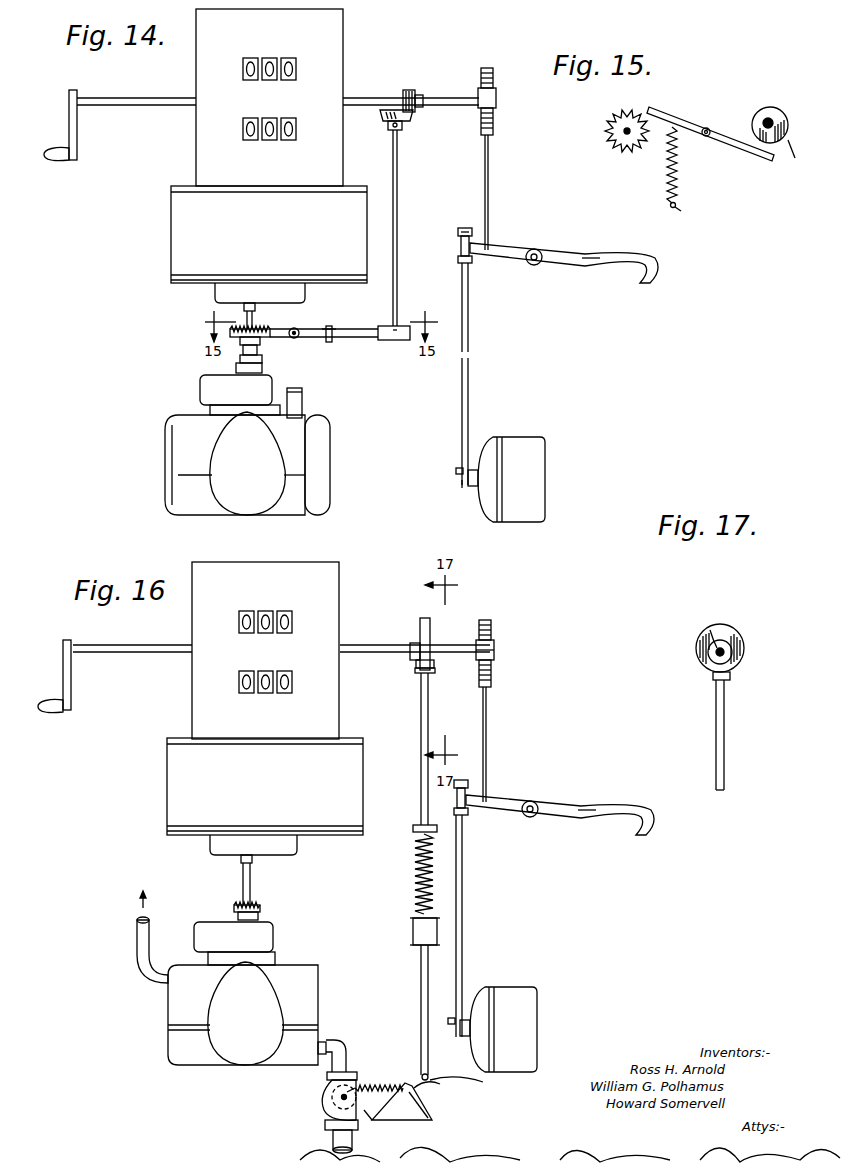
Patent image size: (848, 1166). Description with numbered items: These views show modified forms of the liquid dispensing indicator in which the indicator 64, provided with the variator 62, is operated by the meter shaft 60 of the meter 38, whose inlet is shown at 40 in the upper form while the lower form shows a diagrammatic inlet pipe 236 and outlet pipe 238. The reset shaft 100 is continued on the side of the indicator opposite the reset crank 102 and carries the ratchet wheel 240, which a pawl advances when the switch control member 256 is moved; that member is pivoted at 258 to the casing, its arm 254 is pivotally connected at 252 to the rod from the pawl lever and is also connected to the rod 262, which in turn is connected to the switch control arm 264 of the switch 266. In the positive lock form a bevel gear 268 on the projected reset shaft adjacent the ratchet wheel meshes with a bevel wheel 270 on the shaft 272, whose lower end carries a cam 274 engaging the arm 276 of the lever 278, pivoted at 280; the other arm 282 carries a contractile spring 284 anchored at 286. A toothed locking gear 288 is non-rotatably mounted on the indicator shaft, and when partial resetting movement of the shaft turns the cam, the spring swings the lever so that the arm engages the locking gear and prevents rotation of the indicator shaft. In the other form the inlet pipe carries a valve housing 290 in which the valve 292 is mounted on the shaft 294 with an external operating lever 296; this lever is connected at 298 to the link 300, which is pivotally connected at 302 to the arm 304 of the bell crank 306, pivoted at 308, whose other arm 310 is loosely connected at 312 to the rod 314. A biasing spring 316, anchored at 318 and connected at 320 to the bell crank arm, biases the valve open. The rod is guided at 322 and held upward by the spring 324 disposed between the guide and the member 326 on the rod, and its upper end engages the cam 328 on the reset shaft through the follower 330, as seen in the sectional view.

In FIG. 14, the meter 38 is at (183, 451).
In FIG. 16, the meter 38 is at (178, 1041).
In FIG. 14, the inlet 40 is at (208, 389).
In FIG. 14, the meter shaft 60 is at (256, 318).
In FIG. 15, the meter shaft 60 is at (618, 135).
In FIG. 16, the meter shaft 60 is at (258, 884).
In FIG. 14, the variator 62 is at (185, 250).
In FIG. 16, the variator 62 is at (180, 766).
In FIG. 14, the indicator 64 is at (333, 75).
In FIG. 16, the indicator 64 is at (284, 650).
In FIG. 14, the reset shaft 100 is at (122, 105).
In FIG. 17, the reset shaft 100 is at (711, 632).
In FIG. 16, the reset shaft 100 is at (126, 653).
In FIG. 14, the reset crank 102 is at (70, 130).
In FIG. 16, the reset crank 102 is at (66, 665).
In FIG. 16, the inlet pipe 236 is at (333, 1140).
In FIG. 16, the outlet pipe 238 is at (140, 946).
In FIG. 14, the ratchet wheel 240 is at (486, 68).
In FIG. 16, the ratchet wheel 240 is at (509, 636).
In FIG. 14, the pivotal connection 252 is at (470, 247).
In FIG. 16, the pivotal connection 252 is at (490, 787).
In FIG. 14, the arm 254 is at (505, 259).
In FIG. 16, the arm 254 is at (560, 821).
In FIG. 14, the switch control member 256 is at (580, 268).
In FIG. 16, the switch control member 256 is at (584, 812).
In FIG. 14, the pivot 258 is at (533, 266).
In FIG. 16, the pivot 258 is at (532, 834).
In FIG. 14, the rod 262 is at (468, 393).
In FIG. 16, the rod 262 is at (485, 926).
In FIG. 14, the switch control arm 264 is at (470, 479).
In FIG. 16, the switch control arm 264 is at (475, 999).
In FIG. 14, the switch 266 is at (533, 455).
In FIG. 16, the switch 266 is at (526, 1023).
In FIG. 14, the bevel gear 268 is at (412, 90).
In FIG. 14, the bevel wheel 270 is at (406, 118).
In FIG. 14, the shaft 272 is at (399, 205).
In FIG. 15, the shaft 272 is at (773, 107).
In FIG. 16, the shaft 272 is at (515, 636).
In FIG. 14, the cam 274 is at (402, 340).
In FIG. 15, the cam 274 is at (792, 159).
In FIG. 15, the arm 276 is at (752, 151).
In FIG. 14, the lever 278 is at (489, 190).
In FIG. 15, the lever 278 is at (690, 120).
In FIG. 16, the lever 278 is at (512, 744).
In FIG. 15, the pivot 280 is at (710, 123).
In FIG. 15, the arm 282 is at (657, 110).
In FIG. 15, the contractile spring 284 is at (678, 166).
In FIG. 15, the anchor 286 is at (688, 177).
In FIG. 15, the toothed locking gear 288 is at (612, 129).
In FIG. 16, the valve housing 290 is at (322, 1101).
In FIG. 16, the valve 292 is at (330, 1110).
In FIG. 16, the shaft 294 is at (327, 1072).
In FIG. 16, the external operating lever 296 is at (375, 1097).
In FIG. 16, the connection 298 is at (374, 1123).
In FIG. 16, the link 300 is at (412, 1124).
In FIG. 16, the pivotal connection 302 is at (433, 1124).
In FIG. 16, the arm 304 is at (430, 1118).
In FIG. 16, the bell crank 306 is at (422, 1105).
In FIG. 16, the pivot 308 is at (405, 1084).
In FIG. 16, the arm 310 is at (443, 1088).
In FIG. 16, the loose connection 312 is at (428, 1077).
In FIG. 17, the rod 314 is at (724, 731).
In FIG. 16, the rod 314 is at (420, 969).
In FIG. 16, the biasing spring 316 is at (380, 1084).
In FIG. 16, the anchor 318 is at (363, 1086).
In FIG. 16, the connection 320 is at (472, 1087).
In FIG. 16, the guide 322 is at (413, 930).
In FIG. 16, the spring 324 is at (414, 860).
In FIG. 16, the member 326 is at (412, 838).
In FIG. 17, the cam 328 is at (735, 640).
In FIG. 16, the cam 328 is at (430, 625).
In FIG. 17, the follower 330 is at (712, 678).
In FIG. 16, the follower 330 is at (418, 671).